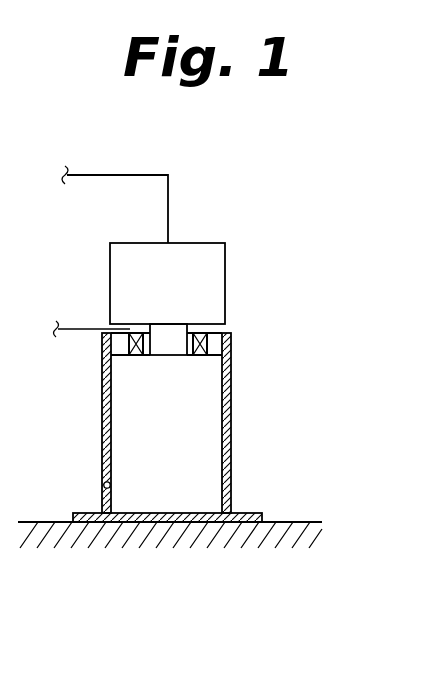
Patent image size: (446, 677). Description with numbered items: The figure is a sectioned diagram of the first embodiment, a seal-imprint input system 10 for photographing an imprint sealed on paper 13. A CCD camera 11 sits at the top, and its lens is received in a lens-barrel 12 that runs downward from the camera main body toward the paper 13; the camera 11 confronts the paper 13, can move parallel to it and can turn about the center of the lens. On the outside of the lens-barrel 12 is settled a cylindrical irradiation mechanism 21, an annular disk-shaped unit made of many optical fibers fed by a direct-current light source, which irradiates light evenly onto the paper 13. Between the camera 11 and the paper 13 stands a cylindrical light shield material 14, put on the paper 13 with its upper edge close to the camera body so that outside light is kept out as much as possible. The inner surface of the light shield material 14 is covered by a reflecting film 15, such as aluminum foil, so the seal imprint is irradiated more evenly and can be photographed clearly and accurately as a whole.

The seal-imprint input system 10 is at (240, 344).
The CCD camera 11 is at (215, 243).
The lens-barrel 12 is at (165, 331).
The paper 13 is at (253, 512).
The cylindrical light shield material 14 is at (101, 418).
The film 15 is at (103, 485).
The cylindrical irradiation mechanism 21 is at (129, 344).